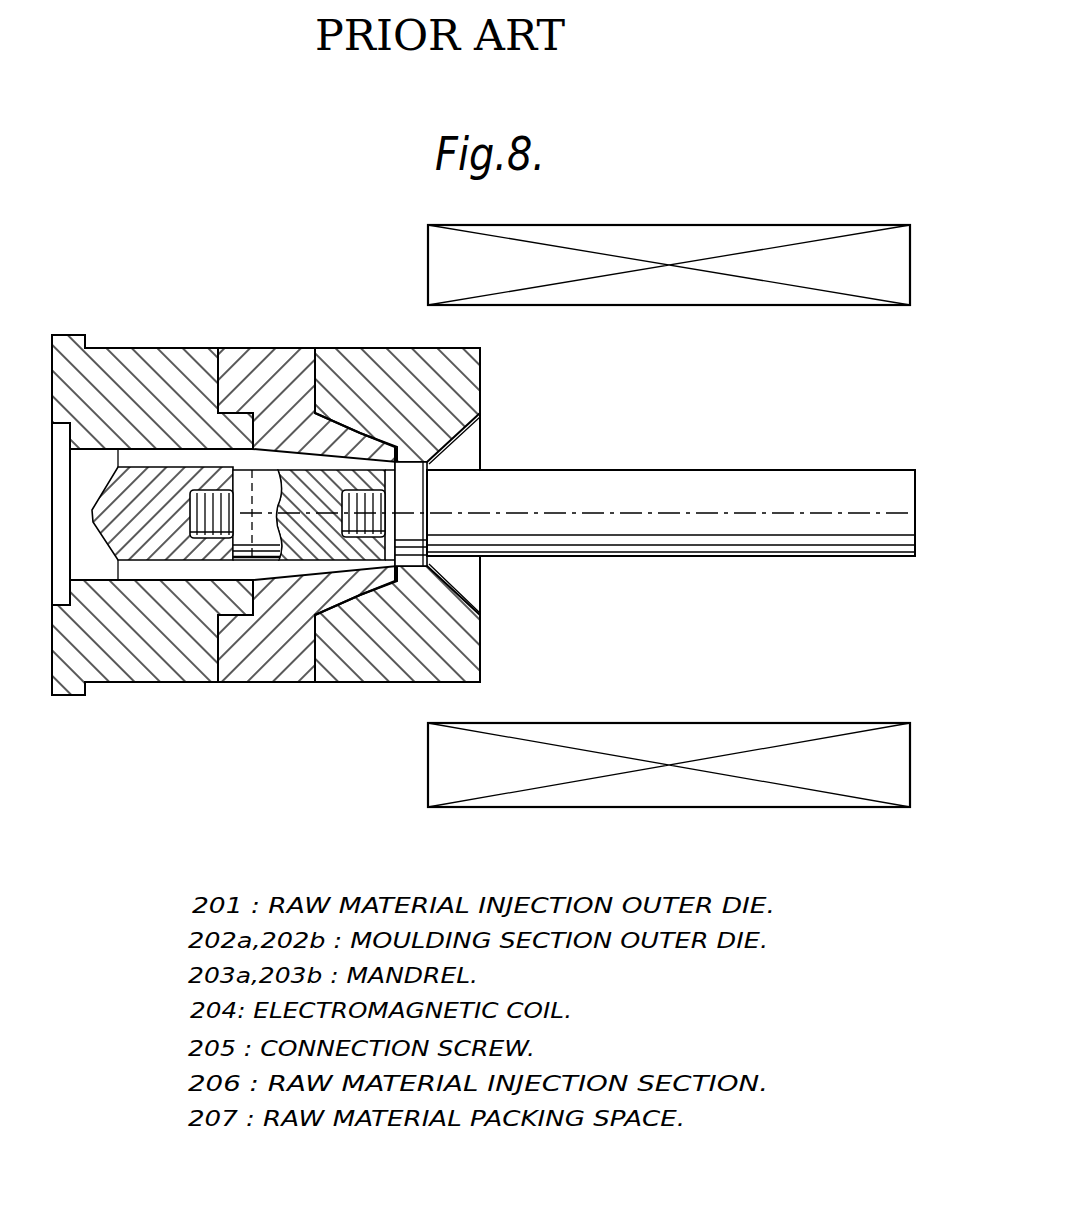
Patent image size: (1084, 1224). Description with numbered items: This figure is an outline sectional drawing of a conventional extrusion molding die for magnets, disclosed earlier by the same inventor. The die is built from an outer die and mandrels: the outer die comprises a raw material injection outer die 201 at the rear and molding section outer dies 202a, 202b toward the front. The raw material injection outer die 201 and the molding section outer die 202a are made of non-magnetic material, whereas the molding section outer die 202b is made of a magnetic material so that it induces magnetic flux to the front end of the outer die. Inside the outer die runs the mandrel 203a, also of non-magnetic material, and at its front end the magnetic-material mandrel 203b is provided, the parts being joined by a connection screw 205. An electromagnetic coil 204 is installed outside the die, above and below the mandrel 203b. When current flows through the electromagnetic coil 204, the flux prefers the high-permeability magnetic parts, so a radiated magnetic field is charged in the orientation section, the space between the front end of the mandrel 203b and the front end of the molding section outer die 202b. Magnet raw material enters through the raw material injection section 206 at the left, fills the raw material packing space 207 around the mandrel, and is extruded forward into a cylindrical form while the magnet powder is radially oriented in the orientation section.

The raw material injection outer die 201 is at (142, 372).
The molding section outer die 202a is at (258, 380).
The molding section outer die 202b is at (432, 388).
The mandrel 203a is at (143, 562).
The mandrel 203b is at (738, 480).
The electromagnetic coil 204 is at (722, 300).
The connection screw 205 is at (198, 542).
The raw material injection section 206 is at (88, 487).
The raw material packing space 207 is at (272, 572).